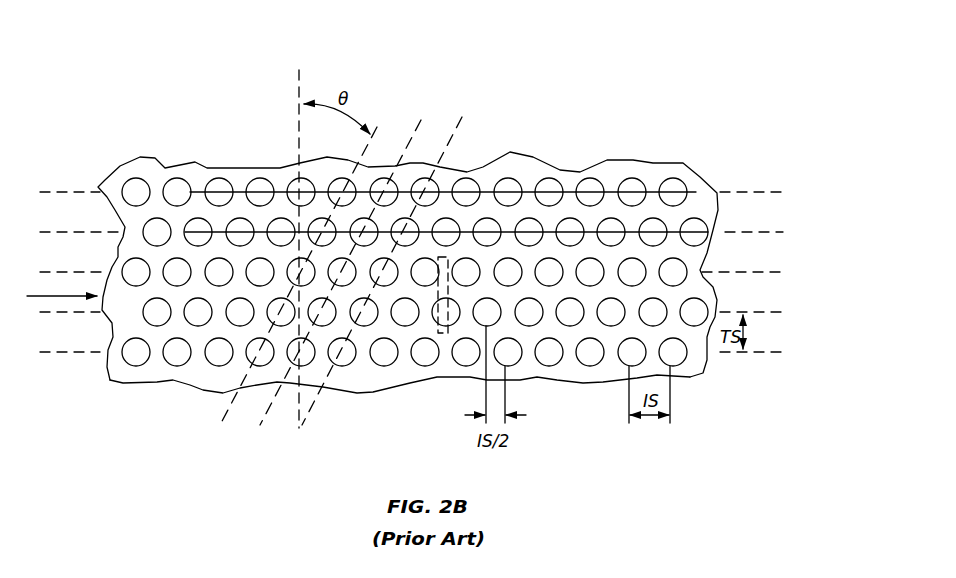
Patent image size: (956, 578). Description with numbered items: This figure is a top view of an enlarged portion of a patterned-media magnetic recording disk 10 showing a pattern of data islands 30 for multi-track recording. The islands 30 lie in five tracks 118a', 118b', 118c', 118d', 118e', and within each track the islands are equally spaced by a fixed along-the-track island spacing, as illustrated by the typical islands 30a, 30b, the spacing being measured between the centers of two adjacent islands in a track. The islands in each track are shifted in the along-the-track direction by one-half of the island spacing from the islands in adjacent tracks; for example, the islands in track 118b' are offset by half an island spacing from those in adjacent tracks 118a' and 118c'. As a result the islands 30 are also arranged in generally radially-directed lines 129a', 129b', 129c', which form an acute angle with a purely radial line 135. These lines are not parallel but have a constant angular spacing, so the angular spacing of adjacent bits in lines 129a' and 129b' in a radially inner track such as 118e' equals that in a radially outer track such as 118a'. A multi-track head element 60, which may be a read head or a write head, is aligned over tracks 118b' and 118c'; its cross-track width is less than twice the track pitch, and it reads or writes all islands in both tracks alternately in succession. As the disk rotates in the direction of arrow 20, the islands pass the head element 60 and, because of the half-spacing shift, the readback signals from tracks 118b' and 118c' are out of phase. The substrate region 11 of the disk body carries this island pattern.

The disk 10 is at (194, 103).
The substrate web 11 is at (212, 383).
The arrow 20 is at (56, 296).
The data islands 30 is at (290, 181).
The island 30a is at (631, 358).
The island 30b is at (672, 360).
The multi-track head element 60 is at (438, 335).
The purely radial line 135 is at (298, 93).
The line 129a' is at (367, 238).
The line 129b' is at (398, 250).
The line 129c' is at (420, 268).
The track 118a' is at (437, 341).
The track 118b' is at (437, 301).
The track 118c' is at (436, 261).
The track 118d' is at (437, 220).
The track 118e' is at (437, 181).